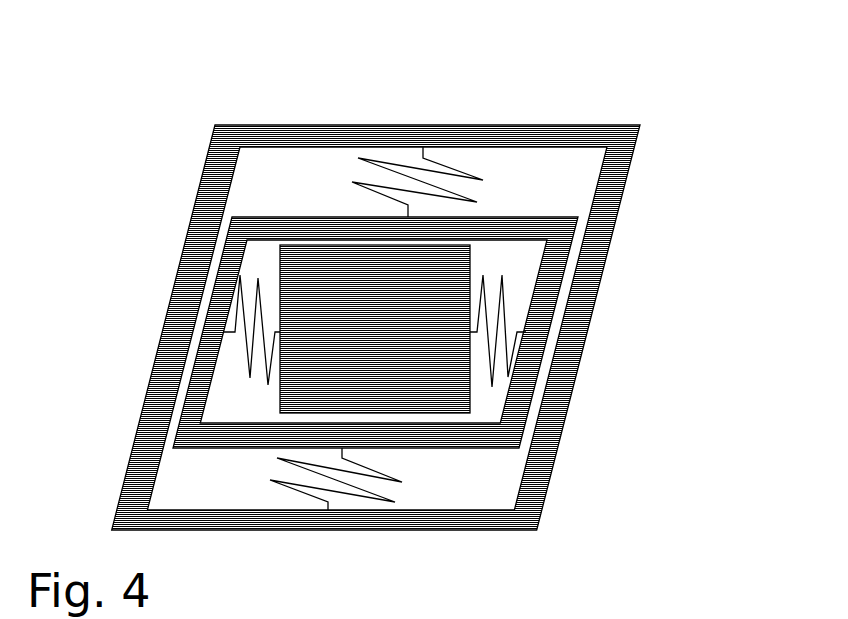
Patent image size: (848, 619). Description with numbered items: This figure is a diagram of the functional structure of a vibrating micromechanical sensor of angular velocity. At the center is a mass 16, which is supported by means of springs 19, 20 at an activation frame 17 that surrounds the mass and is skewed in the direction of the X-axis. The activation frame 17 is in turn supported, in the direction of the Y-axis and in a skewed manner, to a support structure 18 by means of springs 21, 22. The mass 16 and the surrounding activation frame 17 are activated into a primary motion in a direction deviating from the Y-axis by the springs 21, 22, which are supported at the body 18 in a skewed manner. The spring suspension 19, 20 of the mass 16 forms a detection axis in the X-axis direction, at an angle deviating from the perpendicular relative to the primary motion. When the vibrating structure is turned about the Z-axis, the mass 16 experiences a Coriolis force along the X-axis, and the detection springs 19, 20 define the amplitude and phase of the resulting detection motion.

The mass 16 is at (472, 265).
The activation frame 17 is at (528, 217).
The support structure 18 is at (577, 124).
The spring 19 is at (260, 278).
The spring 20 is at (505, 304).
The spring 21 is at (461, 173).
The spring 22 is at (385, 477).